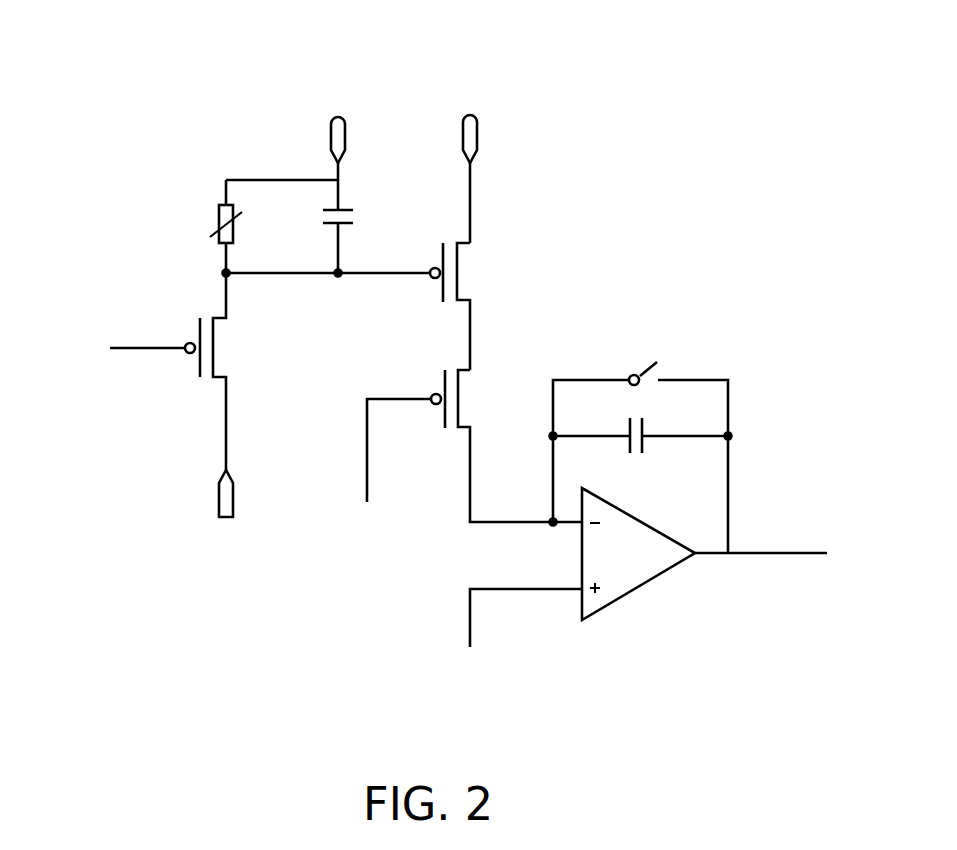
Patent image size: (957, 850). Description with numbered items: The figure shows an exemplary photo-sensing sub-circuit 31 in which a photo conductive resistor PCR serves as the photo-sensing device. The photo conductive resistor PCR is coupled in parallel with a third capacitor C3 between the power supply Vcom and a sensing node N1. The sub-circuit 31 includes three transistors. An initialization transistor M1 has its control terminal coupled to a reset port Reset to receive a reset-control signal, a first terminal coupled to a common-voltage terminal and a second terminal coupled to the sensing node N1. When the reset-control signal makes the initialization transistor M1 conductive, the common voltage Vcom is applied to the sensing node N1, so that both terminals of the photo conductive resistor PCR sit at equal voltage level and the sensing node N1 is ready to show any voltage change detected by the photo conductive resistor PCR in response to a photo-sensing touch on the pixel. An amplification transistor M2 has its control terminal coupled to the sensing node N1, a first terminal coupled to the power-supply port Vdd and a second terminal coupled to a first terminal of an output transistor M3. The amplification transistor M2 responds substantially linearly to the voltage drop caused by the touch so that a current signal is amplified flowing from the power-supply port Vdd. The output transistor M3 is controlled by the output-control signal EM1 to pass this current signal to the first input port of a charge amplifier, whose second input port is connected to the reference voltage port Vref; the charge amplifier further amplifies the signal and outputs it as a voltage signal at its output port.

The photo-sensing sub-circuit 31 is at (414, 52).
The initialization transistor M1 is at (225, 371).
The amplification transistor M2 is at (468, 306).
The output transistor M3 is at (506, 446).
The third capacitor C3 is at (357, 239).
The sensing node N1 is at (327, 293).
The photo conductive resistor PCR is at (202, 226).
The output-control signal EM1 is at (388, 472).
The reference voltage port Vref is at (510, 631).
The power-supply port Vdd is at (473, 161).
The common voltage Vcom is at (337, 146).
The reset port Reset is at (111, 348).